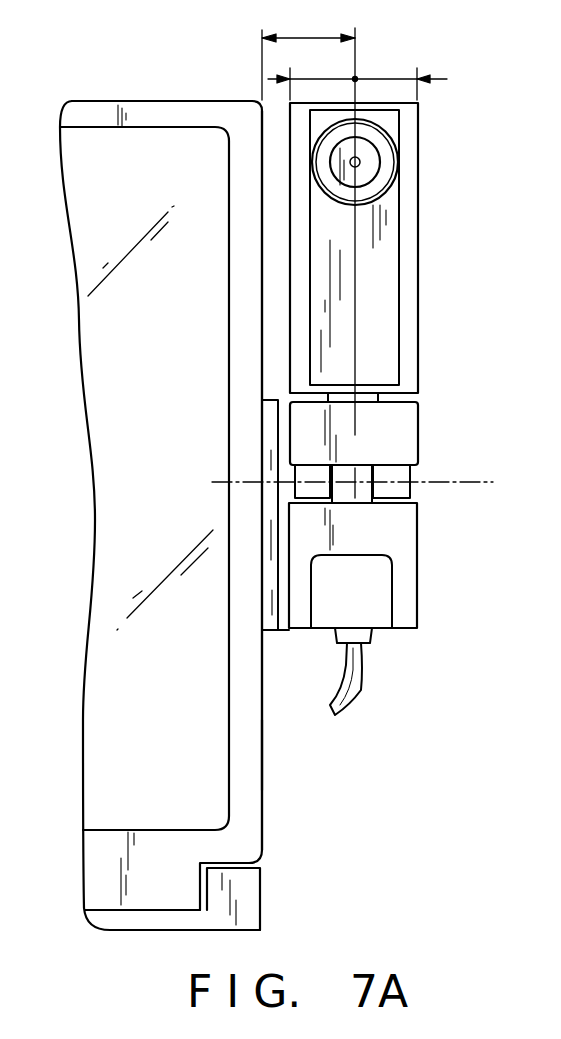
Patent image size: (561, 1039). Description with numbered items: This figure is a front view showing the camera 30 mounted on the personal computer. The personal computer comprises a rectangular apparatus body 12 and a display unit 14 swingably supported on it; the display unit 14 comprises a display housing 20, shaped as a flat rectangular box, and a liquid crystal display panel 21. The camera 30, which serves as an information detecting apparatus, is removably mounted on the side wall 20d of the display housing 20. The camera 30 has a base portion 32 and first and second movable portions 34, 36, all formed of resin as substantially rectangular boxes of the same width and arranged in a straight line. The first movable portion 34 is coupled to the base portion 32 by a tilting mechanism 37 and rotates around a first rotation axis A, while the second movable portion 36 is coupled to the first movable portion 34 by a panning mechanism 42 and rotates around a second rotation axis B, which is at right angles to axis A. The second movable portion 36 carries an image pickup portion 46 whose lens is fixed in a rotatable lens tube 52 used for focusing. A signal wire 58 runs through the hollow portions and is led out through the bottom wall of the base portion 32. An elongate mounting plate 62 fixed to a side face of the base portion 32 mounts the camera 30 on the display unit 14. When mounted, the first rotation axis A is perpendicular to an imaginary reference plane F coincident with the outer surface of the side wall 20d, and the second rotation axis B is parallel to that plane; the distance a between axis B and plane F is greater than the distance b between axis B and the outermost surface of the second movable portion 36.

The apparatus body 12 is at (254, 895).
The display unit 14 is at (203, 100).
The display housing 20 is at (152, 97).
The side wall 20d is at (262, 308).
The liquid crystal display panel 21 is at (79, 278).
The camera 30 is at (395, 362).
The base portion 32 is at (412, 596).
The first movable portion 34 is at (413, 431).
The second movable portion 36 is at (413, 258).
The tilting mechanism 37 is at (421, 494).
The panning mechanism 42 is at (375, 380).
The image pickup portion 46 is at (396, 129).
The lens tube 52 is at (400, 163).
The signal wire 58 is at (363, 681).
The mounting plate 62 is at (270, 632).
The first rotation axis A is at (362, 493).
The second rotation axis B is at (357, 303).
The imaginary reference plane F is at (273, 747).
The distance between second rotation axis and reference plane a is at (308, 55).
The distance between second rotation axis and outermost portion of second movable po b is at (357, 73).